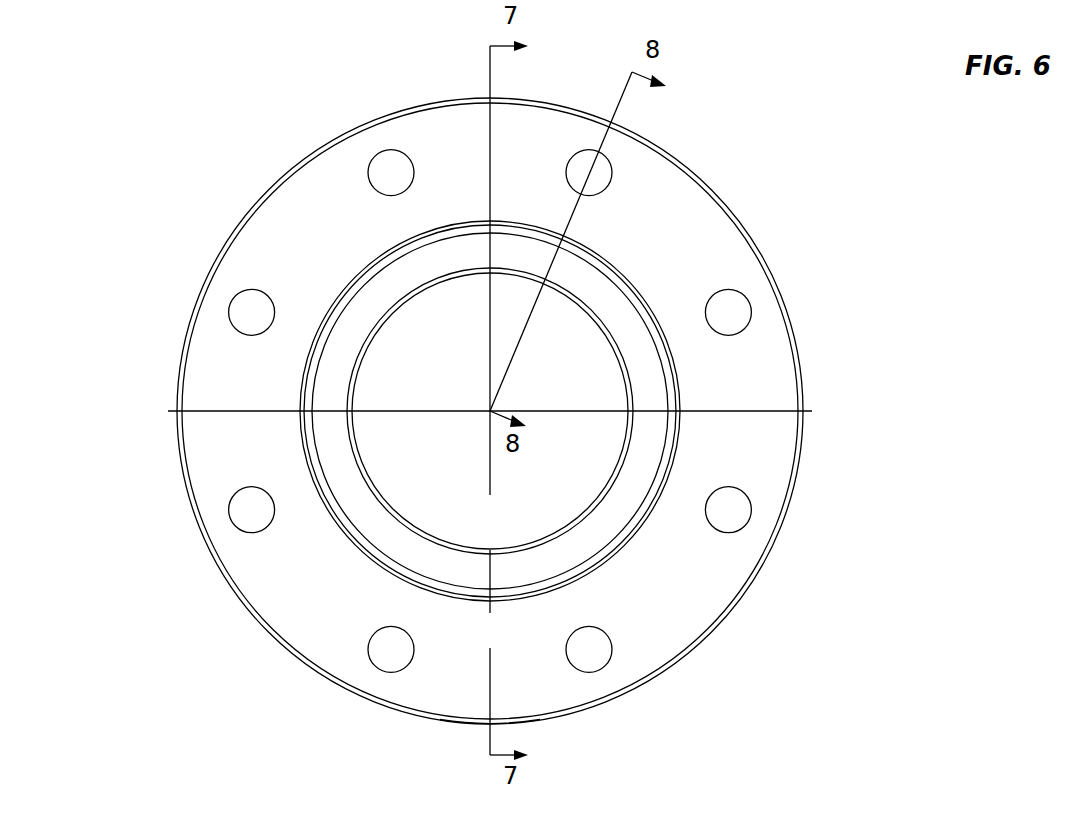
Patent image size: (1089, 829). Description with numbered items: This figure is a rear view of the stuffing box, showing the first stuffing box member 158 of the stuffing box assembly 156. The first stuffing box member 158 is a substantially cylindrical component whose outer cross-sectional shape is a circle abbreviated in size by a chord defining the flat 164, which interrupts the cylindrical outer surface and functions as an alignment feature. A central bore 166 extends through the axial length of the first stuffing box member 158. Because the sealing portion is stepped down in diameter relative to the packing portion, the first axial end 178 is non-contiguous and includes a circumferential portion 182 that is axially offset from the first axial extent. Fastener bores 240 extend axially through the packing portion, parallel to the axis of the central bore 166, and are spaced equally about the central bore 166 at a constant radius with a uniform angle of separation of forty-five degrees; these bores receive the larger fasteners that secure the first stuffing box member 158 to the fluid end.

The stuffing box assembly 156 is at (778, 201).
The first stuffing box member 158 is at (725, 593).
The flat 164 is at (477, 721).
The central bore 166 is at (598, 501).
The first axial end 178 is at (236, 178).
The circumferential portion 182 is at (683, 190).
The fastener bores 240 is at (751, 513).